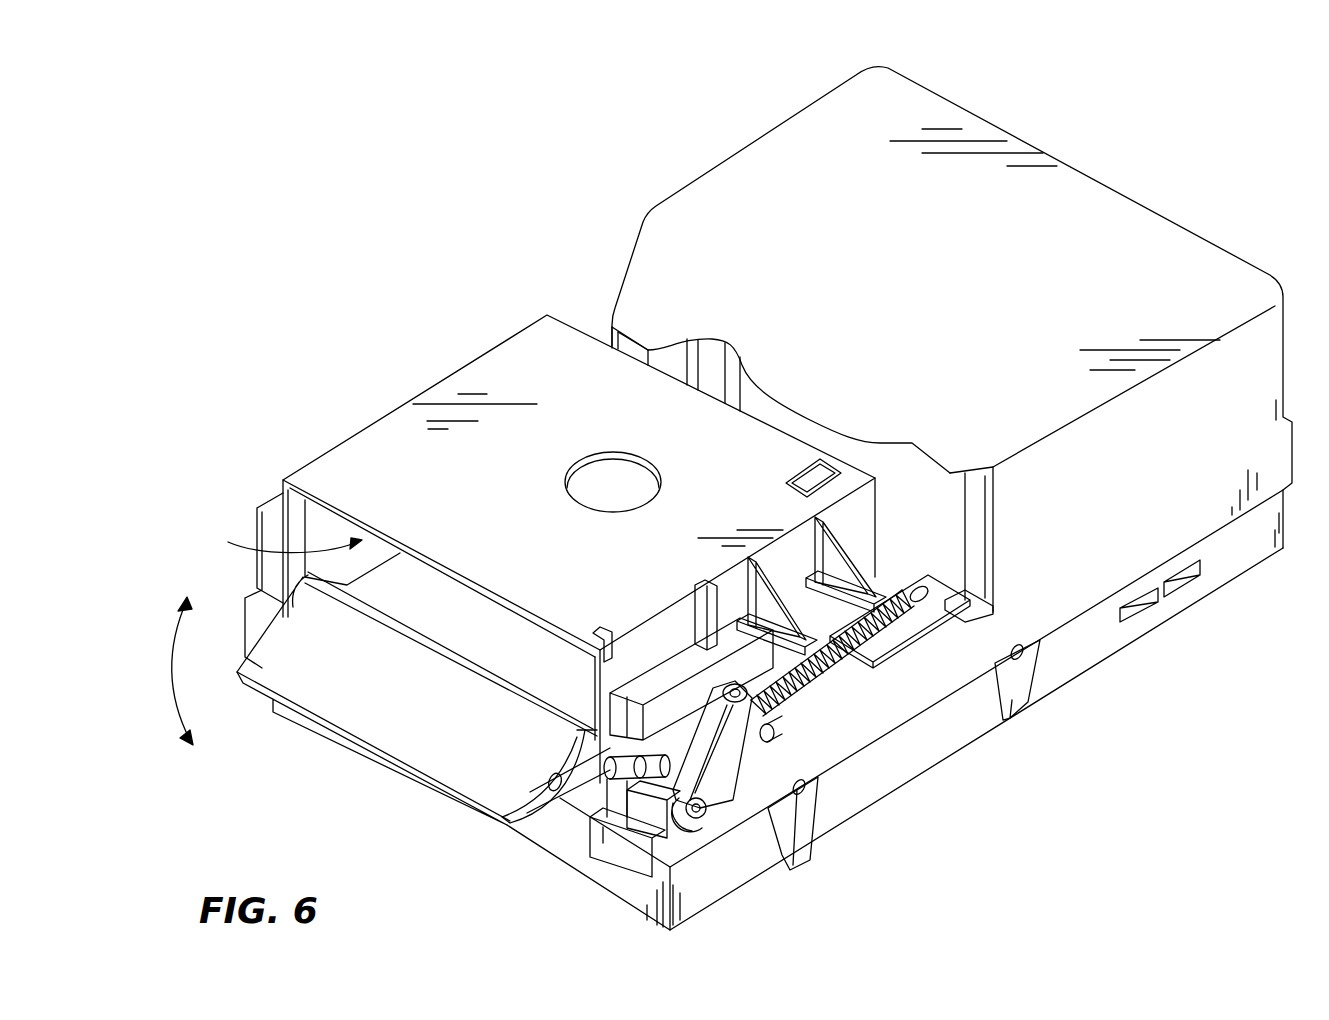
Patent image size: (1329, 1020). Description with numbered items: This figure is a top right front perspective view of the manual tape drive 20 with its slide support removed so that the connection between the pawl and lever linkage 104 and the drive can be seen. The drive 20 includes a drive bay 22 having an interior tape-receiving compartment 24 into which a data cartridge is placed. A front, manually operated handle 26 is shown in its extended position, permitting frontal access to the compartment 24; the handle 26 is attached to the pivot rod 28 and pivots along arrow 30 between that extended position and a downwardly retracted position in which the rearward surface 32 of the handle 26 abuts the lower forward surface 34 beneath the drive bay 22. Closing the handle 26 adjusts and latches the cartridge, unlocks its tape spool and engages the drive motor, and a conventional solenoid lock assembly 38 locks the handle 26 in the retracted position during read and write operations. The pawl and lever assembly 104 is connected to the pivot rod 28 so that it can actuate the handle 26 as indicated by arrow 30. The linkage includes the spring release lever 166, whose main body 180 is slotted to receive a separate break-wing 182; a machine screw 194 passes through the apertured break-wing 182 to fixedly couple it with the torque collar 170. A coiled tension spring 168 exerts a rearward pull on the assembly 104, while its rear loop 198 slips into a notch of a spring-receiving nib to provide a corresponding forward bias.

The manual tape drive 20 is at (1018, 148).
The drive bay 22 is at (376, 456).
The tape-receiving compartment 24 is at (404, 598).
The handle 26 is at (338, 713).
The pivot rod 28 is at (528, 838).
The arrow 30 is at (158, 680).
The rearward surface 32 is at (309, 652).
The lower forward surface 34 is at (279, 545).
The solenoid lock assembly 38 is at (803, 600).
The pawl and lever linkage 104 is at (740, 764).
The spring release lever 166 is at (707, 723).
The coiled tension spring 168 is at (865, 657).
The torque collar 170 is at (657, 792).
The main body 180 is at (724, 768).
The break-wing 182 is at (665, 852).
The machine screw 194 is at (704, 816).
The rear loop 198 is at (915, 591).